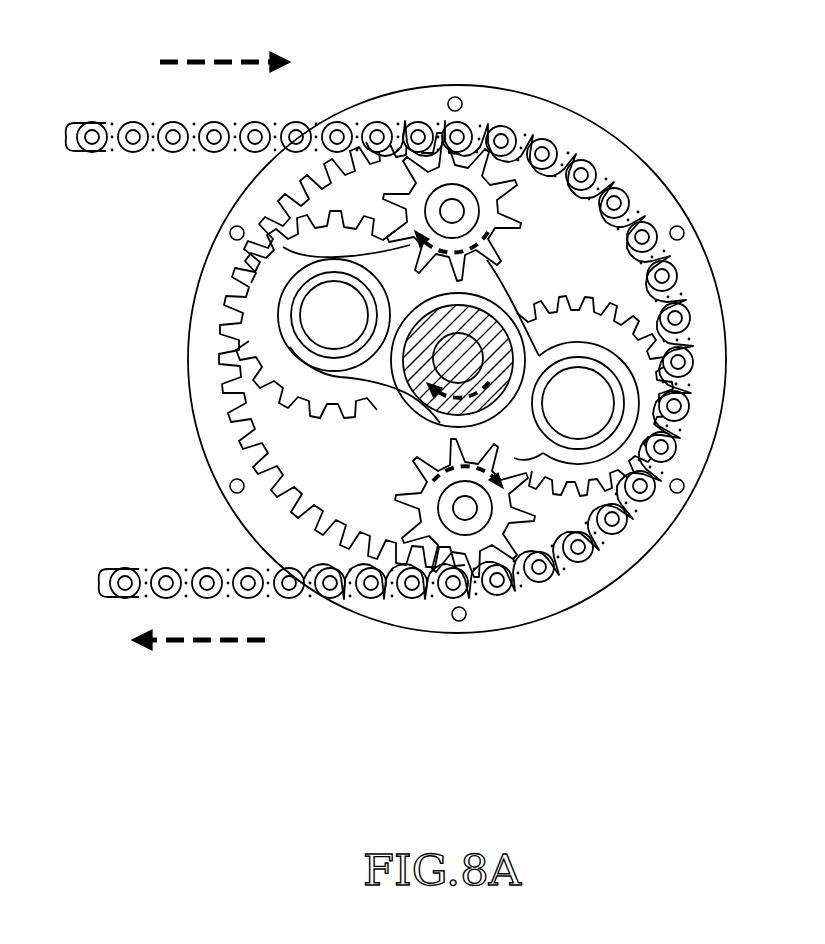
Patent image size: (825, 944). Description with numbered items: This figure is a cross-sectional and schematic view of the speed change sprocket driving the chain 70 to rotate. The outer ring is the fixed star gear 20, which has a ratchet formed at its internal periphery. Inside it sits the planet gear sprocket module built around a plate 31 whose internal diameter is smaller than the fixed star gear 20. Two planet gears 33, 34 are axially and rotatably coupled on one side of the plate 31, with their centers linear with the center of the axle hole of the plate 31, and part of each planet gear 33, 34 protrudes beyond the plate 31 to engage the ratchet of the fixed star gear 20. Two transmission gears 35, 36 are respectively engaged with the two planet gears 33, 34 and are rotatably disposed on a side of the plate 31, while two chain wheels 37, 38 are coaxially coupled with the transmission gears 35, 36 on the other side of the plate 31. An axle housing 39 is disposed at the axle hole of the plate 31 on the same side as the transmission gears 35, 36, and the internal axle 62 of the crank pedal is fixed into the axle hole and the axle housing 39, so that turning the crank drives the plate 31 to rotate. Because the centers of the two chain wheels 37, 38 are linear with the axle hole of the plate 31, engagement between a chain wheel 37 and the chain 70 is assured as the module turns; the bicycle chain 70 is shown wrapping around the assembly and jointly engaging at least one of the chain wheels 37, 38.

The fixed star gear 20 is at (655, 188).
The plate 31 is at (367, 377).
The planet gear 33 is at (650, 393).
The planet gear 34 is at (283, 260).
The transmission gear 35 is at (413, 547).
The transmission gear 36 is at (505, 173).
The chain wheel 37 is at (513, 177).
The chain wheel 38 is at (500, 540).
The axle housing 39 is at (415, 408).
The internal axle 62 is at (452, 350).
The chain 70 is at (103, 124).